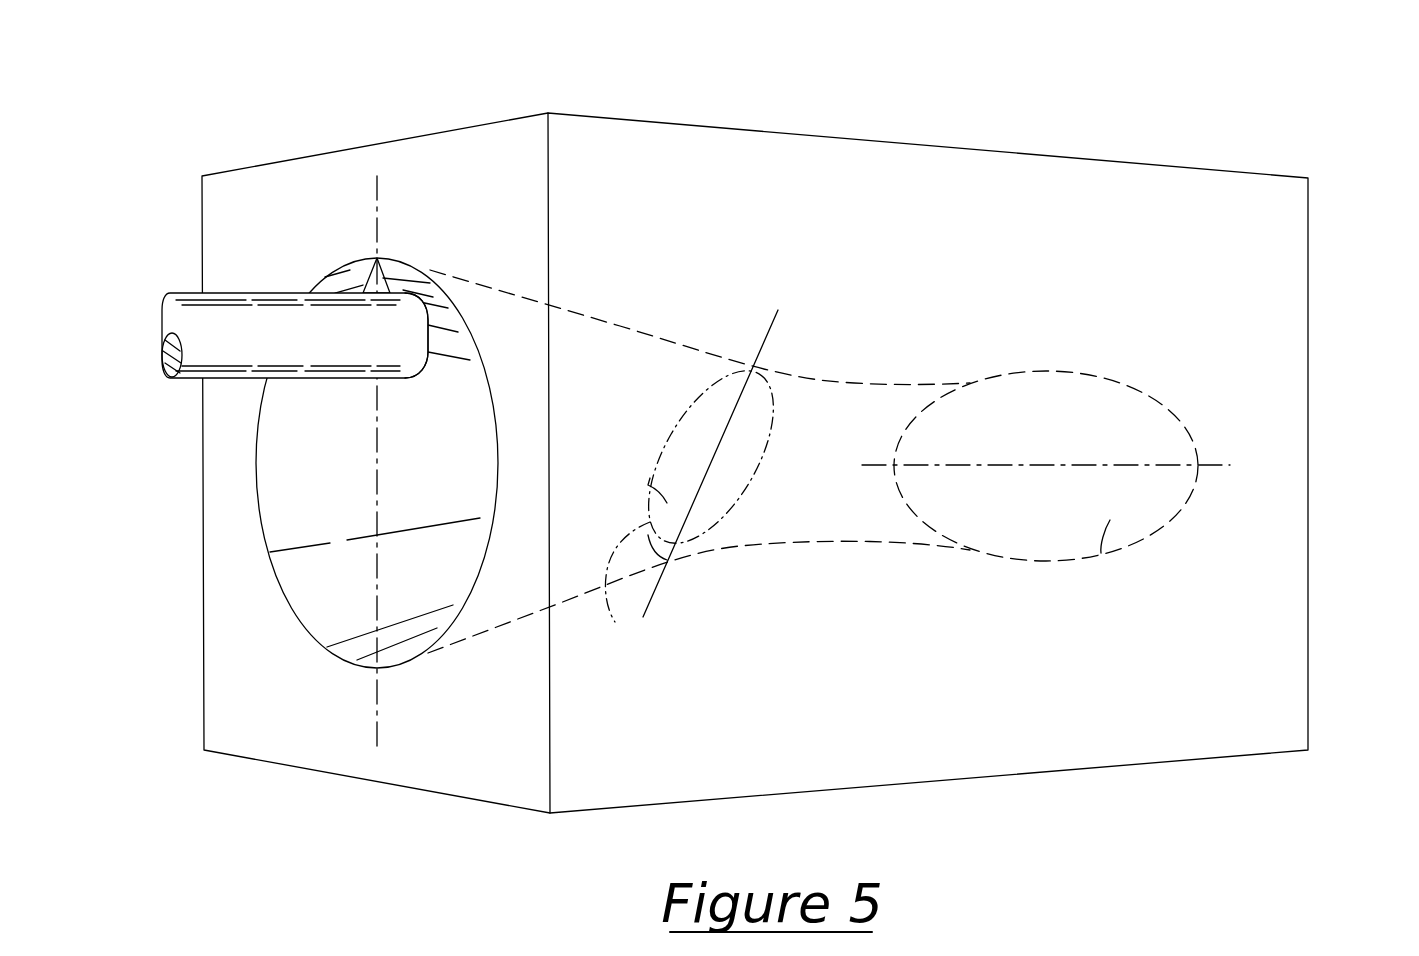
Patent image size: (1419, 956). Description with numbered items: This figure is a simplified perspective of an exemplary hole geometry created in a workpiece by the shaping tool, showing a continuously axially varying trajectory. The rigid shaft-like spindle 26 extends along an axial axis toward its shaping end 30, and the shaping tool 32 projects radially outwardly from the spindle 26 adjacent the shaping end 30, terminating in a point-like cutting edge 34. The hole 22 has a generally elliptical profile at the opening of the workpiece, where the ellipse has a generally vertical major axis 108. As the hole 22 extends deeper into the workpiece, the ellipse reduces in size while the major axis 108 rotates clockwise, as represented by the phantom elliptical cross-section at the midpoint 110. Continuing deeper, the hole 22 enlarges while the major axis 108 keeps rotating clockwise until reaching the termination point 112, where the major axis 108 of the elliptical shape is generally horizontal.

The hole 22 is at (307, 623).
The spindle 26 is at (306, 385).
The shaping end 30 is at (427, 360).
The shaping tool 32 is at (377, 258).
The point-like cutting edge 34 is at (417, 268).
The major axis 108 is at (377, 193).
The midpoint 110 is at (622, 628).
The termination point 112 is at (1113, 520).